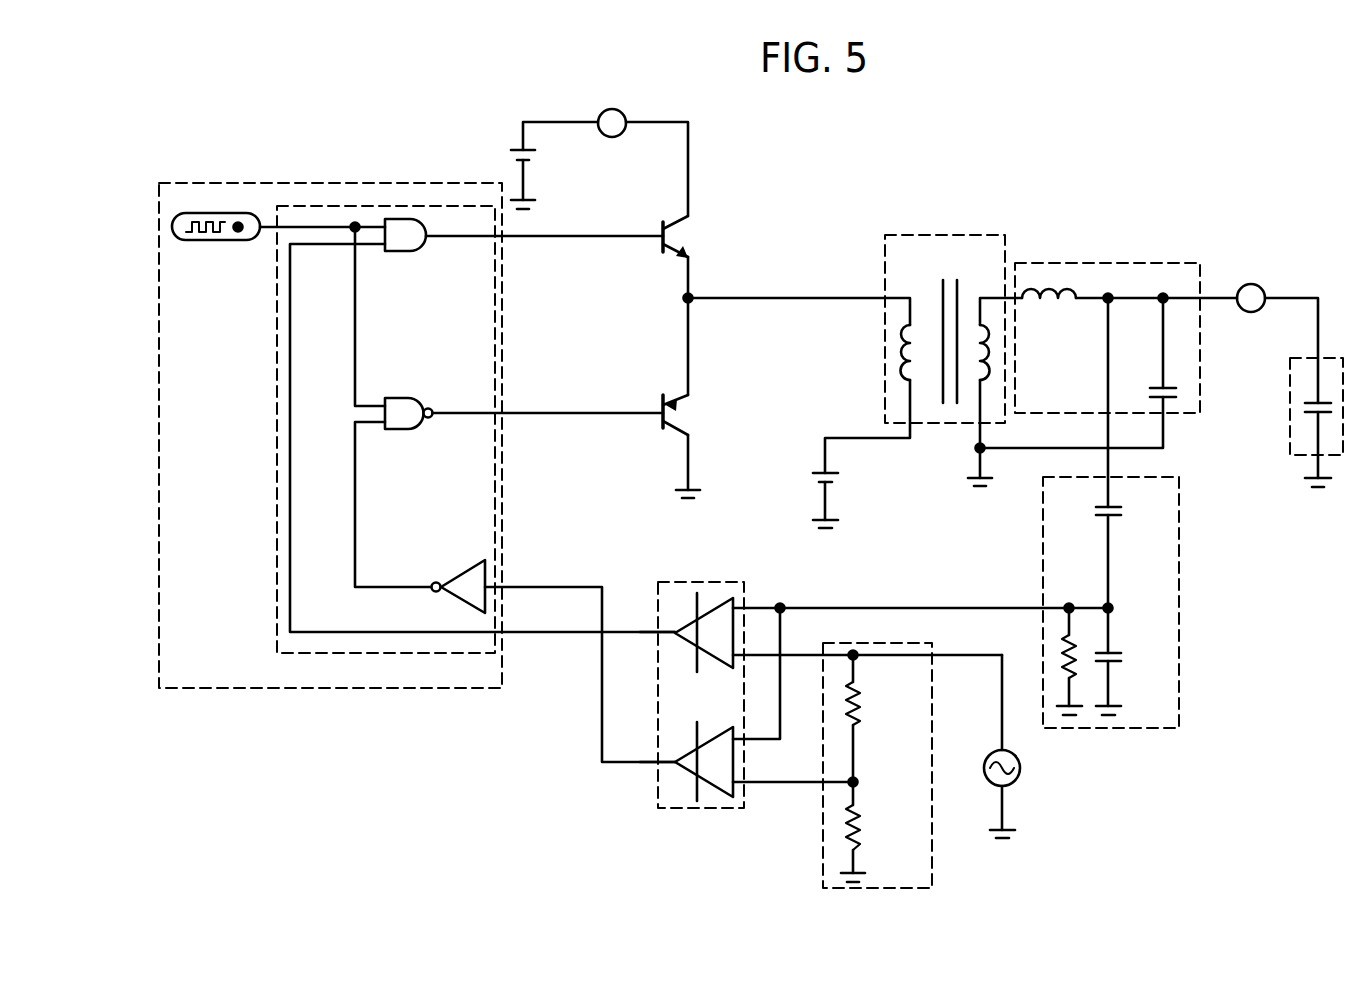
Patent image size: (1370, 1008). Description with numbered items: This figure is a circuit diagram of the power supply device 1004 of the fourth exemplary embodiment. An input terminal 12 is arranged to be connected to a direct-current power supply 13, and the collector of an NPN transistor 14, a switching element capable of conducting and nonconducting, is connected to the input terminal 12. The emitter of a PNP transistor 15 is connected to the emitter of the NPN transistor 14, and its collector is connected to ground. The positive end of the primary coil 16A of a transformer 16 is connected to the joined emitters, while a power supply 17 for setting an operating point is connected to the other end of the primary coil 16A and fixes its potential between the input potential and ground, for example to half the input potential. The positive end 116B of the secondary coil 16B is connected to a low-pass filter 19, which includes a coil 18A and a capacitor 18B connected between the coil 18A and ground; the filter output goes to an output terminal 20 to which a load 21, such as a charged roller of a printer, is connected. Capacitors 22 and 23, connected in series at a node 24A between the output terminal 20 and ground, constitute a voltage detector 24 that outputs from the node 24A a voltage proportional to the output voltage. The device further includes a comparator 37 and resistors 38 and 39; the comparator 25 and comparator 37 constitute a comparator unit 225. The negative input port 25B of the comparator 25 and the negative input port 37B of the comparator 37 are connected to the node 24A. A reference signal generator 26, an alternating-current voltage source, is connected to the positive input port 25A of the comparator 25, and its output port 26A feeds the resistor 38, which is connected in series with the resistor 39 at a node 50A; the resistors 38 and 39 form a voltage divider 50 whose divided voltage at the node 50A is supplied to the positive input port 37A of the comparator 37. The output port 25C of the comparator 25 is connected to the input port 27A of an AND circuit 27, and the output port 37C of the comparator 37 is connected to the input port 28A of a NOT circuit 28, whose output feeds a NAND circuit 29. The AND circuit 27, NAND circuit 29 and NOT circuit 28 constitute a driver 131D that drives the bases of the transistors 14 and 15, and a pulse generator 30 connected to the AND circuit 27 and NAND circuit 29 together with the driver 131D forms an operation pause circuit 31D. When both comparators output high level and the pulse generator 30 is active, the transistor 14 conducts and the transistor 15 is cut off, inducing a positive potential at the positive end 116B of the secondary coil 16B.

The input terminal 12 is at (612, 138).
The direct-current power supply 13 is at (512, 143).
The NPN transistor 14 is at (690, 237).
The PNP transistor 15 is at (687, 417).
The transformer 16 is at (910, 233).
The primary coil 16A is at (900, 358).
The secondary coil 16B is at (972, 315).
The positive end of secondary coil 116B is at (983, 300).
The power supply for setting an operating point 17 is at (805, 477).
The coil 18A is at (1045, 283).
The capacitor 18B is at (1178, 393).
The low-pass filter 19 is at (1127, 262).
The output terminal 20 is at (1248, 283).
The load 21 is at (1340, 357).
The capacitor 22 is at (1120, 522).
The capacitor 23 is at (1123, 655).
The voltage detector 24 is at (1180, 615).
The node 24A is at (1103, 603).
The comparator 25 is at (728, 600).
The positive input port of comparator 25A is at (758, 655).
The negative input port of comparator 25B is at (747, 605).
The output port of comparator 25C is at (652, 632).
The reference signal generator 26 is at (1022, 775).
The output port of reference signal generator 26A is at (998, 712).
The AND circuit 27 is at (402, 252).
The input port of AND circuit 27A is at (367, 243).
The NOT circuit 28 is at (465, 570).
The input port of NOT circuit 28A is at (503, 583).
The NAND circuit 29 is at (403, 397).
The pulse generator 30 is at (212, 243).
The operation pause circuit 31D is at (345, 182).
The driver 131D is at (276, 437).
The comparator 37 is at (727, 795).
The positive input port of comparator 37A is at (752, 787).
The negative input port of comparator 37B is at (755, 733).
The output port of comparator 37C is at (625, 763).
The resistor 38 is at (867, 708).
The resistor 39 is at (867, 830).
The voltage divider 50 is at (932, 853).
The node 50A is at (857, 780).
The comparator unit 225 is at (657, 790).
The power supply device 1004 is at (1268, 173).